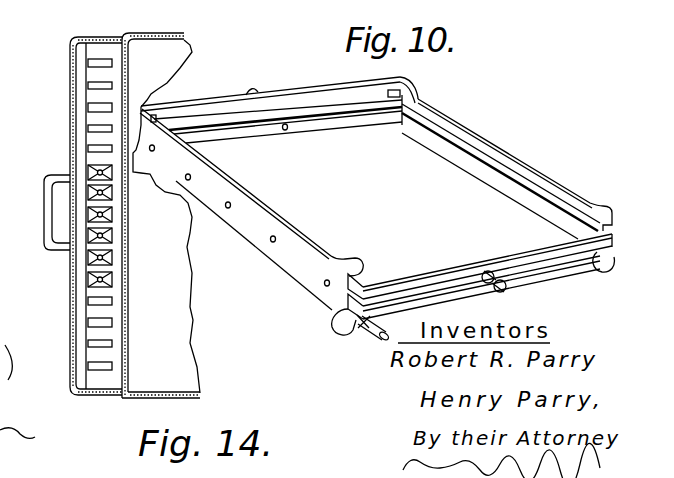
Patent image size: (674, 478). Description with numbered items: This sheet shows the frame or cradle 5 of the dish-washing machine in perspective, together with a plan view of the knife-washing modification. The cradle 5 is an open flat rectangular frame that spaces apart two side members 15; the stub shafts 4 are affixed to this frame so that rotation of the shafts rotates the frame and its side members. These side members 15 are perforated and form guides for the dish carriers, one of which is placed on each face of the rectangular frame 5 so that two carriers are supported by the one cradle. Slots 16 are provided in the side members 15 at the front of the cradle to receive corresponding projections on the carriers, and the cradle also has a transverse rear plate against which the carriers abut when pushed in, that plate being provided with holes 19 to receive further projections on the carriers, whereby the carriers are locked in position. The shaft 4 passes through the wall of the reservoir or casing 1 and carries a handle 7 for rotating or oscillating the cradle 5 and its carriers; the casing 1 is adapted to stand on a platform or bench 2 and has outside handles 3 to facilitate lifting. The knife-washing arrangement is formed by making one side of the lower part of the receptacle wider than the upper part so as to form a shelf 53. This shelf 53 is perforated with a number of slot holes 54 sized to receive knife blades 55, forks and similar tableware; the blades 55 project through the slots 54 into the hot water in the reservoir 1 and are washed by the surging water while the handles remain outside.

In FIG. 14, the reservoir or casing 1 is at (186, 45).
In FIG. 10, the platform or bench 2 is at (481, 168).
In FIG. 14, the handle 3 is at (47, 208).
In FIG. 10, the stub shaft 4 is at (252, 90).
In FIG. 10, the cradle 5 is at (332, 121).
In FIG. 10, the handle 7 is at (372, 340).
In FIG. 10, the side member 15 is at (285, 260).
In FIG. 10, the slot 16 is at (347, 313).
In FIG. 10, the hole 19 is at (157, 116).
In FIG. 14, the shelf 53 is at (97, 117).
In FIG. 14, the slot hole 54 is at (88, 145).
In FIG. 14, the knife blade 55 is at (112, 235).